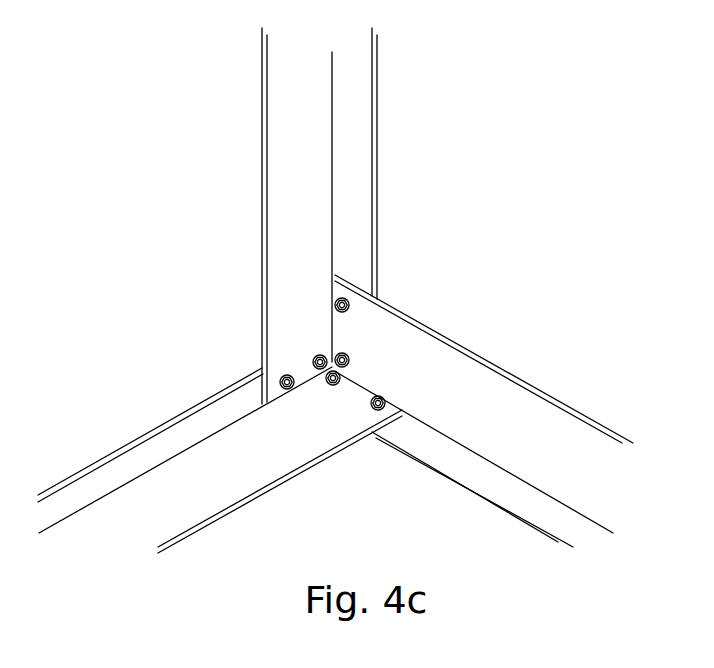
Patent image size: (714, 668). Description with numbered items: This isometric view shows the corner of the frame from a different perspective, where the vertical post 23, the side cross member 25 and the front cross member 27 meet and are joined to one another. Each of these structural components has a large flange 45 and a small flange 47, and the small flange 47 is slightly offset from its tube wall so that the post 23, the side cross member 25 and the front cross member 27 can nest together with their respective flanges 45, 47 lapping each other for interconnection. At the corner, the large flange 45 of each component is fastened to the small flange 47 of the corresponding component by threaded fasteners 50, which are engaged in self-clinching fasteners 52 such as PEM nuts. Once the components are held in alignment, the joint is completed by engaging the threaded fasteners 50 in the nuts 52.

The post 23 is at (247, 207).
The side cross member 25 is at (98, 442).
The front cross member 27 is at (572, 393).
The large flange 45 is at (292, 153).
The small flange 47 is at (358, 138).
The threaded fastener 50 is at (336, 309).
The self-clinching fastener 52 is at (280, 377).